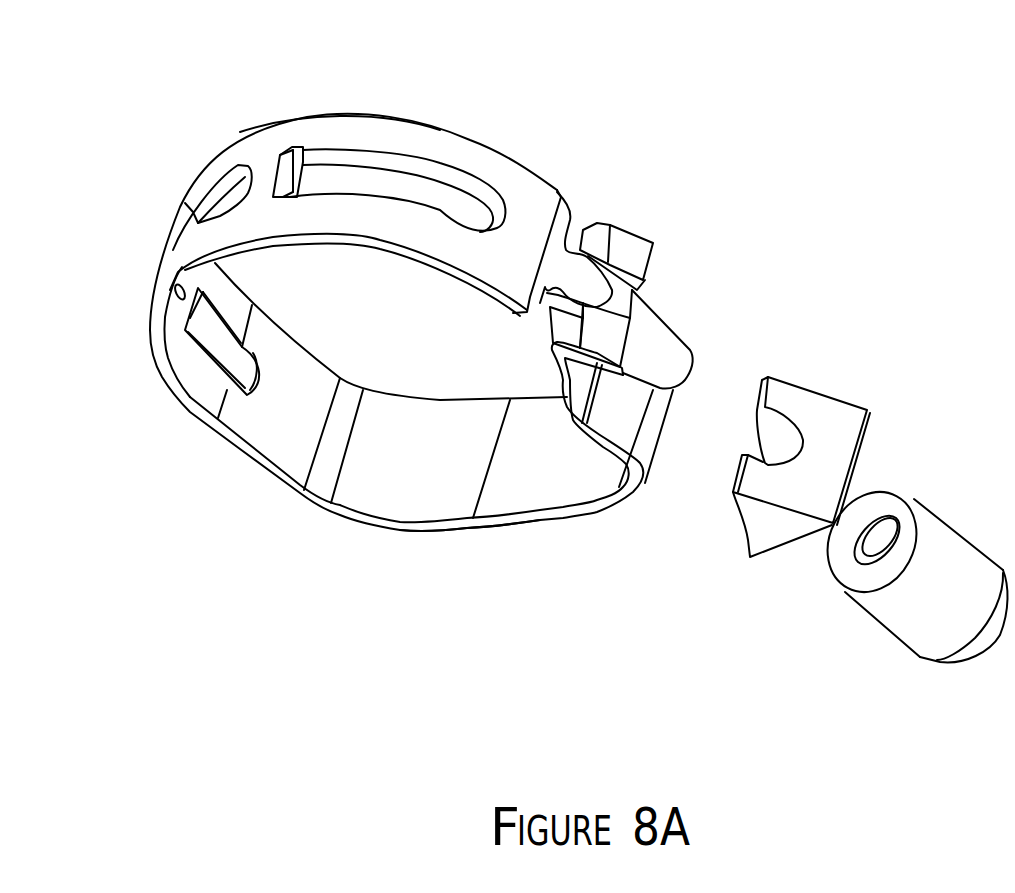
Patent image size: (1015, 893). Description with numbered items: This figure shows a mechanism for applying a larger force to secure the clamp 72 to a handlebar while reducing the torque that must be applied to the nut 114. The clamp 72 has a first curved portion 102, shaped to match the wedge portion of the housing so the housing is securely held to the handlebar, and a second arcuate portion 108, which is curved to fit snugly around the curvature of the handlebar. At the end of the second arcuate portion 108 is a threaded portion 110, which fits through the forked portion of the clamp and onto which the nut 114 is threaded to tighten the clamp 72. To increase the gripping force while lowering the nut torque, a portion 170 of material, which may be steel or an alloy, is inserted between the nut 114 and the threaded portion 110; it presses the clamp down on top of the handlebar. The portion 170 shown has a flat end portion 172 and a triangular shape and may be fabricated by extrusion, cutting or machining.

The clamp 72 is at (380, 115).
The second arcuate portion 108 is at (152, 328).
The first curved portion 102 is at (520, 525).
The threaded portion 110 is at (657, 338).
The portion of material 170 is at (833, 405).
The flat end portion 172 is at (758, 528).
The nut 114 is at (985, 560).